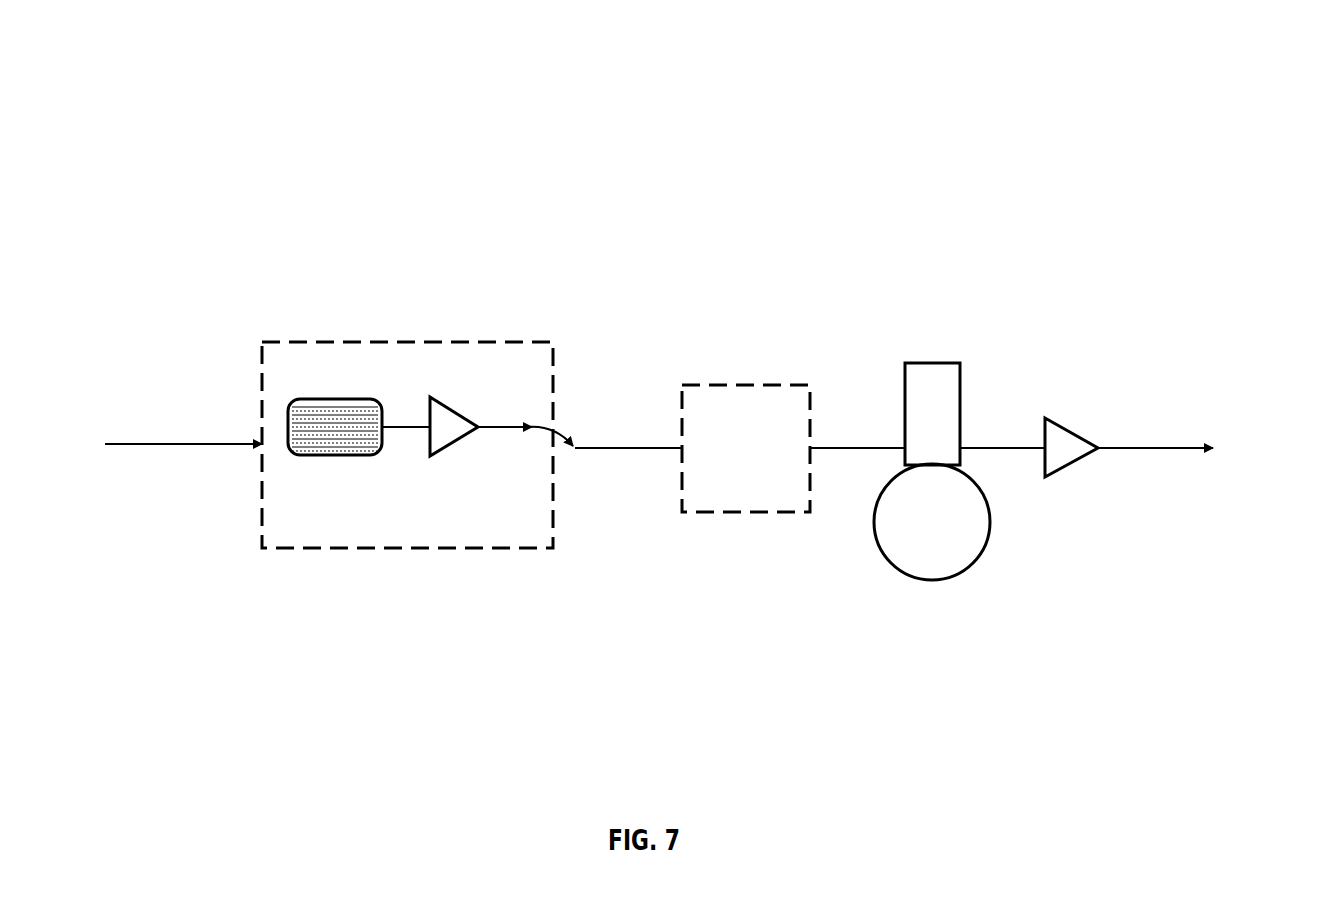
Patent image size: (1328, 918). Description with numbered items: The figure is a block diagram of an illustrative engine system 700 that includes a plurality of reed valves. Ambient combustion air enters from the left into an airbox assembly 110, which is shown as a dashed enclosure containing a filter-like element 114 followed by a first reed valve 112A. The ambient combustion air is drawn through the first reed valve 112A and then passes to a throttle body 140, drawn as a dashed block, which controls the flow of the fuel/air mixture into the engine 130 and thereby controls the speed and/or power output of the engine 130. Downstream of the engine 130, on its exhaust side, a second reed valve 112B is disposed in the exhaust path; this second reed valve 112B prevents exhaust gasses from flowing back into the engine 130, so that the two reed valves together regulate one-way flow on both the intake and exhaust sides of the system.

The engine system 700 is at (1226, 74).
The airbox assembly 110 is at (268, 546).
The filter 114 is at (340, 458).
The first reed valve 112A is at (453, 447).
The throttle body 140 is at (746, 448).
The engine 130 is at (915, 532).
The second reed valve 112B is at (1078, 465).